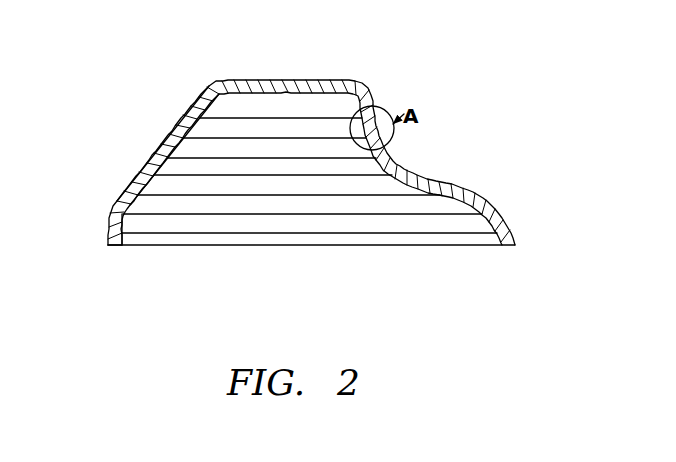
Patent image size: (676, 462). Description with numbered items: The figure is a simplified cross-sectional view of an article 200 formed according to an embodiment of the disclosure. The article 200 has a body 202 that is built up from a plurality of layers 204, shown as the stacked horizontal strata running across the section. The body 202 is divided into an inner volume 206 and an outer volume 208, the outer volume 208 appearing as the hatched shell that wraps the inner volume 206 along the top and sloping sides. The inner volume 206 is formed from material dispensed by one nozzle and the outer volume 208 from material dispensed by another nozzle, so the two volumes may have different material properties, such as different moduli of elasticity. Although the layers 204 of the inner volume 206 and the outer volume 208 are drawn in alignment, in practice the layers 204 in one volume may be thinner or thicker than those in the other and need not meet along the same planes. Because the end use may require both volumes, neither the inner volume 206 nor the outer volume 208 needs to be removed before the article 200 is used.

The article 200 is at (449, 142).
The body 202 is at (366, 84).
The layers 204 is at (378, 208).
The inner volume 206 is at (223, 223).
The outer volume 208 is at (153, 177).